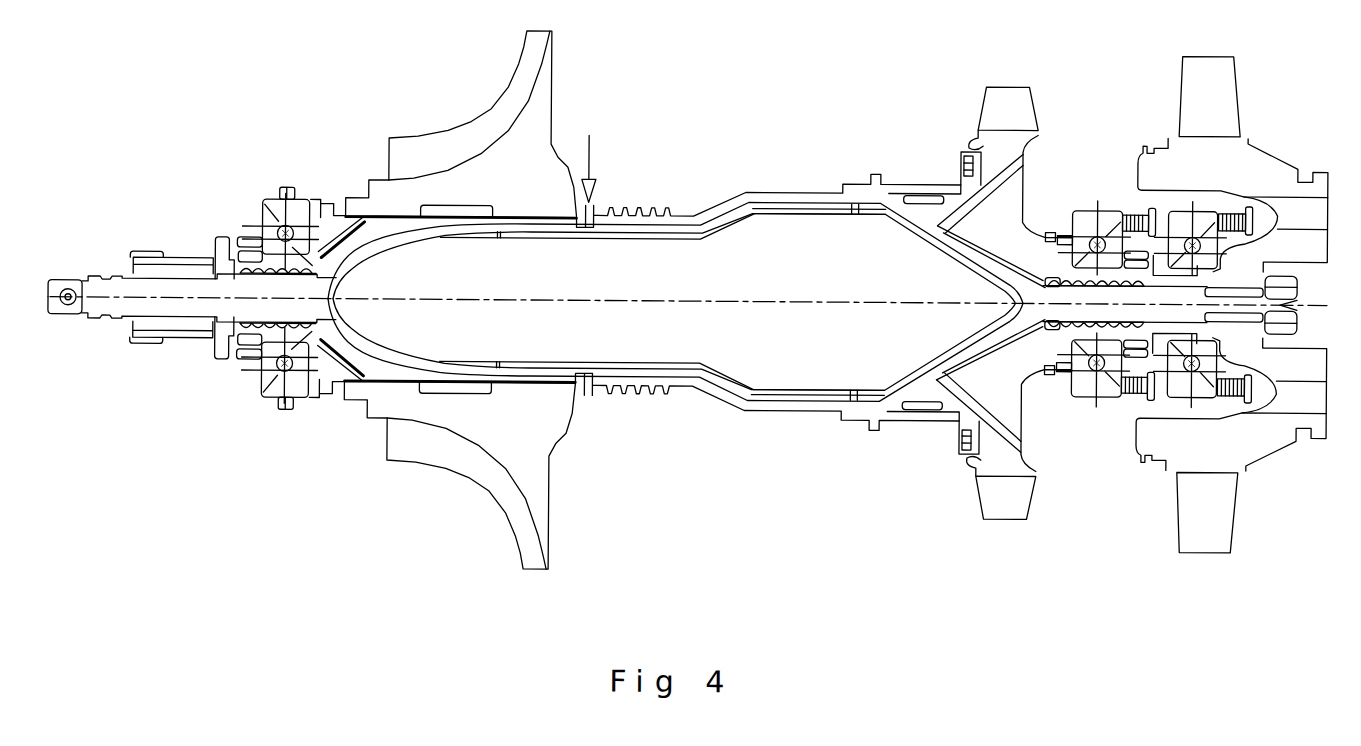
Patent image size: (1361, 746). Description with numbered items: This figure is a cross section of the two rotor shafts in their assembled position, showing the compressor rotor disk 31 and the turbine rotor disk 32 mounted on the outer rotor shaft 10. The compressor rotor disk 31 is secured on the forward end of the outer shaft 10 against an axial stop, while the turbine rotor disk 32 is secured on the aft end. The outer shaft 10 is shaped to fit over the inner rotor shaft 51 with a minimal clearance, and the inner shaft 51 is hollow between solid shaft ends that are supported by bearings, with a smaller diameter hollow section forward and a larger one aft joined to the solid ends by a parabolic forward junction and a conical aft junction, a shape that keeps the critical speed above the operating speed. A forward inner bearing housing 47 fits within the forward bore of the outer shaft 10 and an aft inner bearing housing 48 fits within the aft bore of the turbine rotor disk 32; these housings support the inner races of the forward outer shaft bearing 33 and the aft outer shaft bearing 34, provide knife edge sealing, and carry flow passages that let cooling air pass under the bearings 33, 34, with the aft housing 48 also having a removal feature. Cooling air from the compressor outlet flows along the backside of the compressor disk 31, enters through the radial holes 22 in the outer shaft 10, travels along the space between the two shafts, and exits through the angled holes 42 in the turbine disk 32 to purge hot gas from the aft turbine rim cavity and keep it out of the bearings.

The outer rotor shaft 10 is at (733, 192).
The radial holes 22 is at (599, 196).
The compressor rotor disk 31 is at (533, 140).
The turbine rotor disk 32 is at (1008, 142).
The forward outer shaft bearing 33 is at (276, 208).
The aft outer shaft bearing 34 is at (1085, 217).
The angled holes 42 is at (1008, 434).
The forward inner bearing housing 47 is at (220, 255).
The aft inner bearing housing 48 is at (1172, 275).
The inner rotor shaft 51 is at (724, 232).